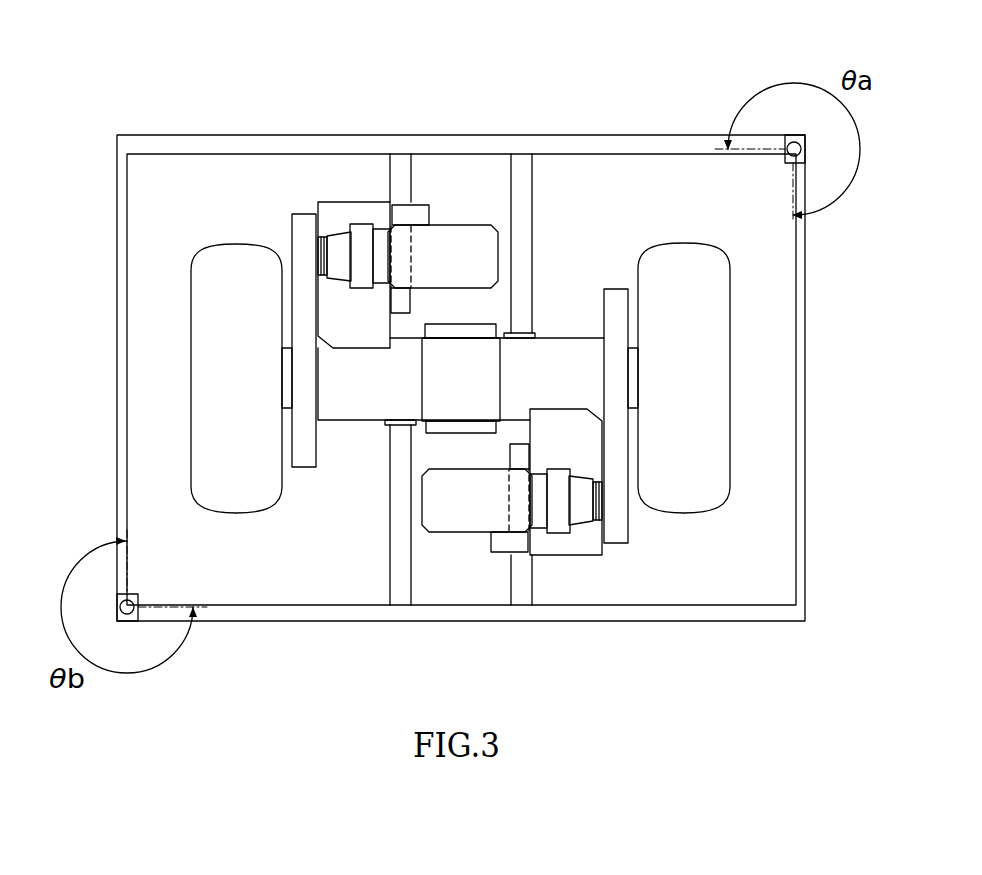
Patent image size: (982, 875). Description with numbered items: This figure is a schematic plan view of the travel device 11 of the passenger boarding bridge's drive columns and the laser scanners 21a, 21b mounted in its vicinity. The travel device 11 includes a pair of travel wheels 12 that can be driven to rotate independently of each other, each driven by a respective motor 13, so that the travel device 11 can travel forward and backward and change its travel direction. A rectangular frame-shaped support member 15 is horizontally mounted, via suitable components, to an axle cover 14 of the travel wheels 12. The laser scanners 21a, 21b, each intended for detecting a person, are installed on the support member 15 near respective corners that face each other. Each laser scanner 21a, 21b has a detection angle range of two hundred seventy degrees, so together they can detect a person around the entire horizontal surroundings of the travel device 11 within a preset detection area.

The travel device 11 is at (193, 93).
The travel wheels 12 is at (237, 243).
The motors 13 is at (448, 220).
The axle cover 14 is at (573, 336).
The support member 15 is at (633, 622).
The laser scanner 21a is at (785, 160).
The laser scanner 21b is at (138, 595).